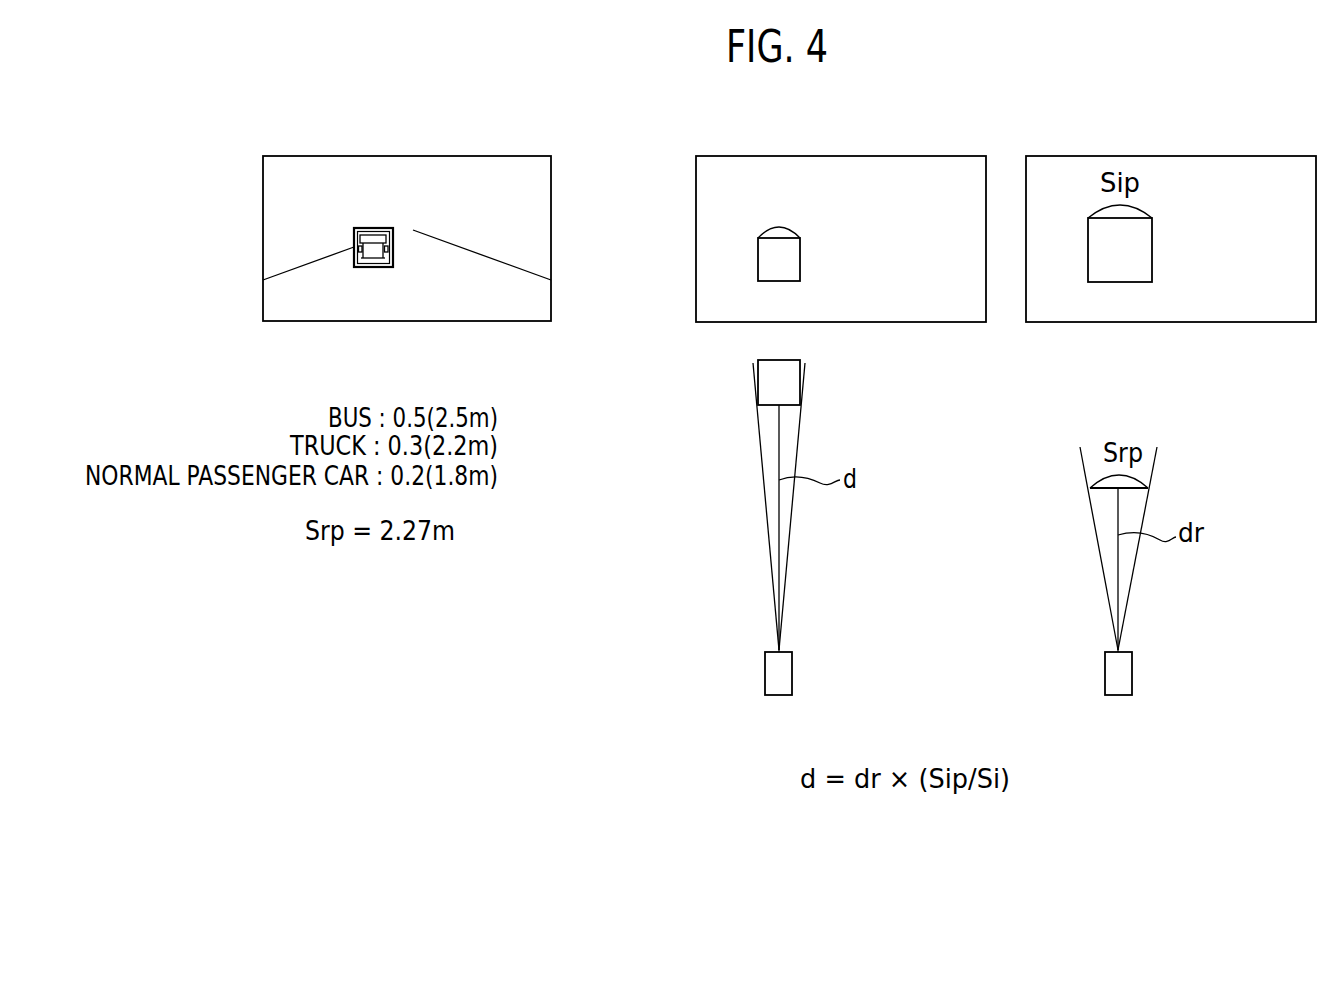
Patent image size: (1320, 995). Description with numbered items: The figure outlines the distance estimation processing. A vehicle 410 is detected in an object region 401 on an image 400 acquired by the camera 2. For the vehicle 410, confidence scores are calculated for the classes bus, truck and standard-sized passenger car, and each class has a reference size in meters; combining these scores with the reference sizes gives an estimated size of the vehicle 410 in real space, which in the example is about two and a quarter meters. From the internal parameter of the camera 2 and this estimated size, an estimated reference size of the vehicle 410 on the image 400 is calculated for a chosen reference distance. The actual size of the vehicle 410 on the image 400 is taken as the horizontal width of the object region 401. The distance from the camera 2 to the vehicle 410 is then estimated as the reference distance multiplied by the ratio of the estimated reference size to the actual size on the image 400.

The image 400 is at (503, 322).
The object region 401 is at (366, 228).
The vehicle 410 is at (378, 252).
The camera 2 is at (792, 676).